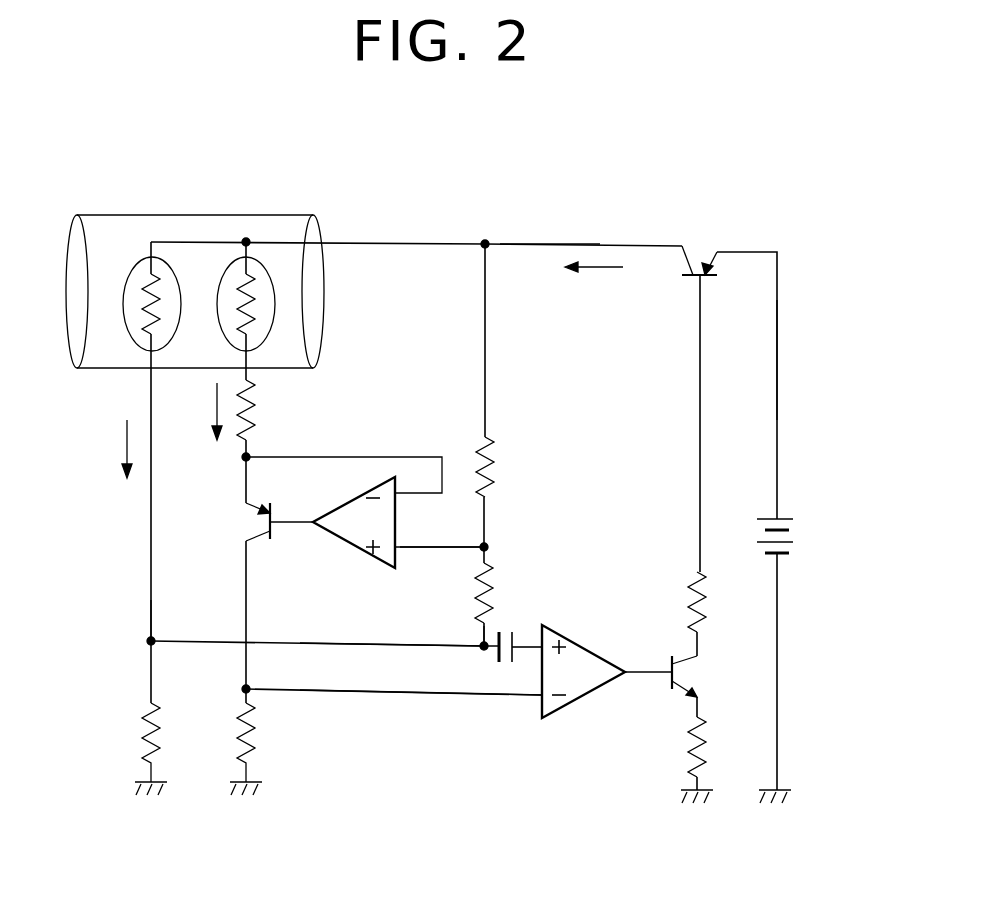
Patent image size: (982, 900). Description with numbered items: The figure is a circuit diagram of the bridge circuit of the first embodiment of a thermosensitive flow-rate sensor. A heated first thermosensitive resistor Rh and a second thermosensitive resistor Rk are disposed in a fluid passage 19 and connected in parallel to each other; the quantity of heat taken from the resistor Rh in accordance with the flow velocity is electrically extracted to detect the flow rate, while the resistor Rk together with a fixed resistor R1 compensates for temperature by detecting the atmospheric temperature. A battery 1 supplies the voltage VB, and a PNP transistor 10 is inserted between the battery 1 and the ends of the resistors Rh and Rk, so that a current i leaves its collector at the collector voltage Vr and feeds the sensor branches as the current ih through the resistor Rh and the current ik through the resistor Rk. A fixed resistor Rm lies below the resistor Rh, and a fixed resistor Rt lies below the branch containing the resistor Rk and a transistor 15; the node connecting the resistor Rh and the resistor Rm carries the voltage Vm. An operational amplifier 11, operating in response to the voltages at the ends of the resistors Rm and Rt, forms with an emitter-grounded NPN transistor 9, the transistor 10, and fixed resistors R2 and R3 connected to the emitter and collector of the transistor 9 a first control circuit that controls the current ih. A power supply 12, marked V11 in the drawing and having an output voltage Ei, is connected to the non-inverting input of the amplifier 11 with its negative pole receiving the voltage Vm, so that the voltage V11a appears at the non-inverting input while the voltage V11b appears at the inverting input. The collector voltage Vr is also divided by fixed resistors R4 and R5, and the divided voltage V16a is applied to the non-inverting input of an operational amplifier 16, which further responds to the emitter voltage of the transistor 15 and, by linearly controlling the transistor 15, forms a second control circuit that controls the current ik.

The battery 1 is at (790, 515).
The NPN transistor 9 is at (692, 673).
The PNP transistor 10 is at (676, 262).
The operational amplifier 11 is at (578, 700).
The power supply 12 is at (498, 664).
The transistor 15 is at (249, 522).
The operational amplifier 16 is at (331, 550).
The fluid passage 19 is at (212, 215).
The first thermosensitive resistor Rh is at (124, 293).
The second thermosensitive resistor Rk is at (222, 293).
The fixed resistor R1 is at (260, 401).
The fixed resistor R2 is at (682, 748).
The fixed resistor R3 is at (682, 603).
The fixed resistor R4 is at (498, 472).
The fixed resistor R5 is at (470, 603).
The fixed resistor Rm is at (120, 738).
The fixed resistor Rt is at (262, 736).
The collector voltage Vr is at (548, 244).
The voltage VB is at (778, 356).
The voltage Vm is at (148, 641).
The divided voltage V16a is at (428, 547).
The op-amp 11 voltage V11 is at (530, 640).
The voltage V11a is at (386, 645).
The voltage V11b is at (424, 697).
The current i is at (590, 270).
The current ih is at (124, 444).
The current ik is at (213, 403).